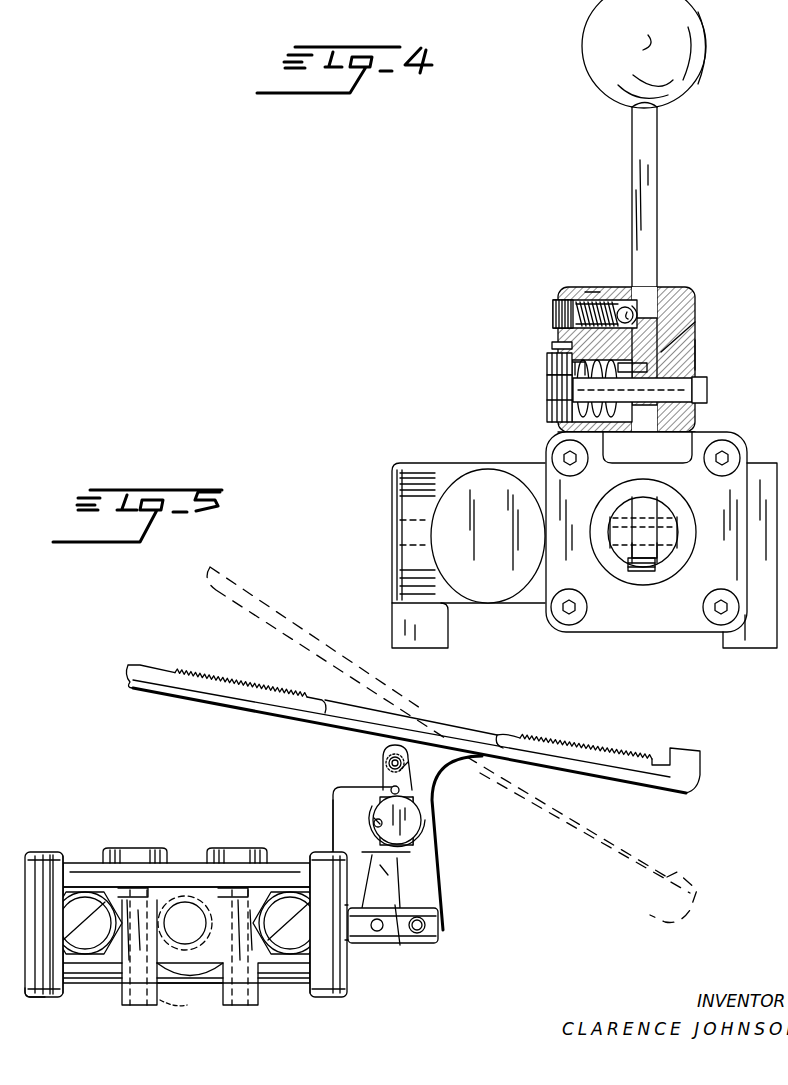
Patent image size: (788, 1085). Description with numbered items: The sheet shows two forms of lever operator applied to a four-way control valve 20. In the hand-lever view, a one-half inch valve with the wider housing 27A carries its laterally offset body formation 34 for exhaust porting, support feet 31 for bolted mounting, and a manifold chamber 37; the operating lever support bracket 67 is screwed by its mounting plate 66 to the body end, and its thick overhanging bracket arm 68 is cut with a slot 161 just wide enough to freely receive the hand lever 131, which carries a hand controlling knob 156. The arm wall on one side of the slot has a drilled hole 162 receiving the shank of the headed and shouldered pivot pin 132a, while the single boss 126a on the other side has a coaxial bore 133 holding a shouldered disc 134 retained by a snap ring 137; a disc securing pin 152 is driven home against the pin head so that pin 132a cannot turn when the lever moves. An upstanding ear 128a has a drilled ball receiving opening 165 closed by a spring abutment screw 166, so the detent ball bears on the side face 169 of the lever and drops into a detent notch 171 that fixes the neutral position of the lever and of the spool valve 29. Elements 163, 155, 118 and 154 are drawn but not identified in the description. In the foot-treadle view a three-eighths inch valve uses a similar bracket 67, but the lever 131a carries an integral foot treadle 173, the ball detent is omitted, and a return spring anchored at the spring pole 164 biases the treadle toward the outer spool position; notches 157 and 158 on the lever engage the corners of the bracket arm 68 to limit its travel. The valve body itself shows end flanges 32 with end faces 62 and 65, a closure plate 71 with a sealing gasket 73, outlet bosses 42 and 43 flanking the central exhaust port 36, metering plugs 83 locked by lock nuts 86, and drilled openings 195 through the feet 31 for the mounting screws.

In FIG. 4, the knob 156 is at (702, 30).
In FIG. 4, the operating lever 131 is at (651, 162).
In FIG. 4, the side face of lever 169 is at (633, 203).
In FIG. 4, the boss 126a is at (567, 290).
In FIG. 5, the boss 126a is at (452, 816).
In FIG. 4, the upstanding ear 128a is at (590, 292).
In FIG. 5, the upstanding ear 128a is at (384, 757).
In FIG. 4, the ball receiving opening 165 is at (620, 307).
In FIG. 4, the detent notch 171 is at (640, 306).
In FIG. 4, the bracket arm 68 is at (668, 290).
In FIG. 5, the bracket arm 68 is at (338, 787).
In FIG. 4, the spring abutment screw 166 is at (556, 306).
In FIG. 5, the spring abutment screw 166 is at (406, 762).
In FIG. 4, the slot 161 is at (660, 318).
In FIG. 4, the disc securing pin 152 is at (552, 345).
In FIG. 5, the disc securing pin 152 is at (400, 789).
In FIG. 4, the housing cavity 163 is at (673, 352).
In FIG. 4, the spring pole 164 is at (560, 365).
In FIG. 5, the spring pole 164 is at (374, 824).
In FIG. 4, the drilled hole 162 is at (694, 362).
In FIG. 4, the shouldered disc 134 is at (548, 385).
In FIG. 5, the shouldered disc 134 is at (412, 828).
In FIG. 4, the snap ring 137 is at (696, 377).
In FIG. 4, the bore 133 is at (548, 407).
In FIG. 4, the pivot pin 132a is at (708, 388).
In FIG. 4, the housing 27A is at (445, 461).
In FIG. 5, the housing 27A is at (178, 866).
In FIG. 4, the body formation 34 is at (524, 475).
In FIG. 5, the body formation 34 is at (143, 898).
In FIG. 4, the opening 155 is at (665, 516).
In FIG. 5, the opening 155 is at (430, 920).
In FIG. 4, the shaft 118 is at (622, 565).
In FIG. 5, the shaft 118 is at (400, 947).
In FIG. 4, the retaining ring 154 is at (643, 565).
In FIG. 5, the retaining ring 154 is at (428, 928).
In FIG. 4, the manifold chamber 37 is at (430, 648).
In FIG. 4, the operating lever support bracket 67 is at (572, 636).
In FIG. 5, the operating lever support bracket 67 is at (330, 818).
In FIG. 4, the mounting plate 66 is at (618, 630).
In FIG. 5, the mounting plate 66 is at (347, 985).
In FIG. 4, the valve 20 is at (690, 637).
In FIG. 5, the valve 20 is at (81, 860).
In FIG. 5, the foot treadle 173 is at (137, 662).
In FIG. 5, the operating lever 131a is at (436, 860).
In FIG. 5, the notch 158 is at (375, 820).
In FIG. 5, the notch 157 is at (386, 880).
In FIG. 5, the spindle 29 is at (358, 944).
In FIG. 5, the closure plate 71 is at (30, 850).
In FIG. 5, the sealing gasket 73 is at (46, 856).
In FIG. 5, the boss 42 is at (122, 848).
In FIG. 5, the exhaust port 36 is at (190, 915).
In FIG. 5, the boss 43 is at (249, 850).
In FIG. 5, the lock nut 86 is at (85, 940).
In FIG. 5, the end flange 32 is at (63, 997).
In FIG. 5, the end face 62 is at (38, 998).
In FIG. 5, the support feet 31 is at (133, 1006).
In FIG. 5, the drilled opening 195 is at (218, 994).
In FIG. 5, the metering plug 83 is at (290, 940).
In FIG. 5, the end face 65 is at (336, 997).